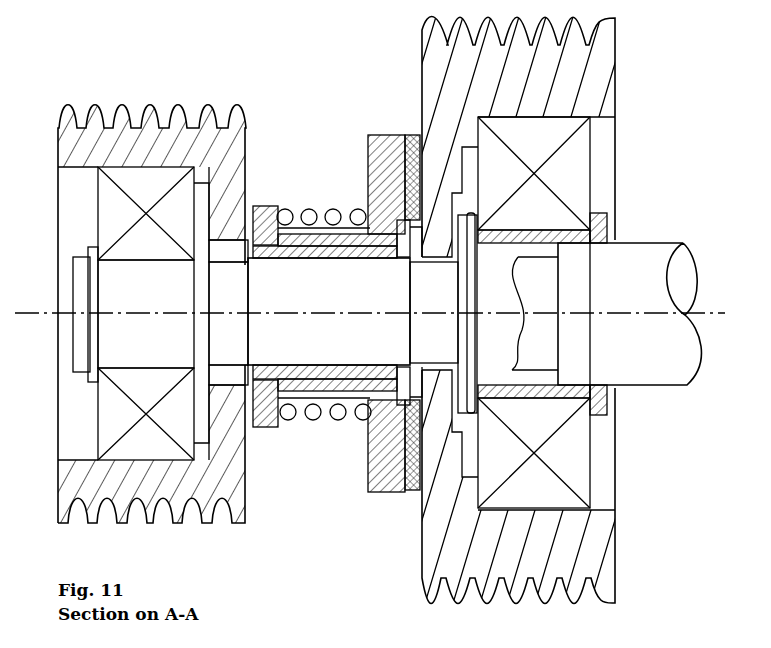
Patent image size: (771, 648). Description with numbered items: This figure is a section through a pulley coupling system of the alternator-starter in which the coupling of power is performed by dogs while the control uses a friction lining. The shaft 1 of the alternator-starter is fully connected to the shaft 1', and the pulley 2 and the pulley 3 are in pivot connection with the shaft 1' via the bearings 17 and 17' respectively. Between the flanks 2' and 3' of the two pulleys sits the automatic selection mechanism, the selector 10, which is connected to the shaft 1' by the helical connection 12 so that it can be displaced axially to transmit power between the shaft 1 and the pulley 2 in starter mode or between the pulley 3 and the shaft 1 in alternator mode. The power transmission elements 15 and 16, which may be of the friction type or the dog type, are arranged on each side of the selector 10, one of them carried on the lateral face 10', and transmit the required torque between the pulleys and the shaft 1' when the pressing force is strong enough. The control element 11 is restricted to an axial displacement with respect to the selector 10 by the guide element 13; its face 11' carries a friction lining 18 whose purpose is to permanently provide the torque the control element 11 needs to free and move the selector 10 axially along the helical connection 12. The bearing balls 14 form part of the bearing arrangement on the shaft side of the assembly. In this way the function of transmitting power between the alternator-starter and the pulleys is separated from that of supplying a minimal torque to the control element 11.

The shaft 1 is at (629, 342).
The shaft 1' is at (447, 369).
The pulley 2 is at (150, 299).
The flank 2' is at (243, 265).
The pulley 3 is at (485, 310).
The flank 3' is at (420, 264).
The selector 10 is at (279, 191).
The lateral face 10' is at (283, 449).
The control element 11 is at (343, 364).
The face 11' is at (378, 179).
The helical connection 12 is at (347, 384).
The guide element 13 is at (365, 405).
The bearing balls 14 is at (335, 205).
The power transmission element 15 is at (180, 515).
The power transmission element 16 is at (437, 332).
The bearing 17 is at (128, 261).
The bearing 17' is at (581, 312).
The friction lining 18 is at (414, 400).